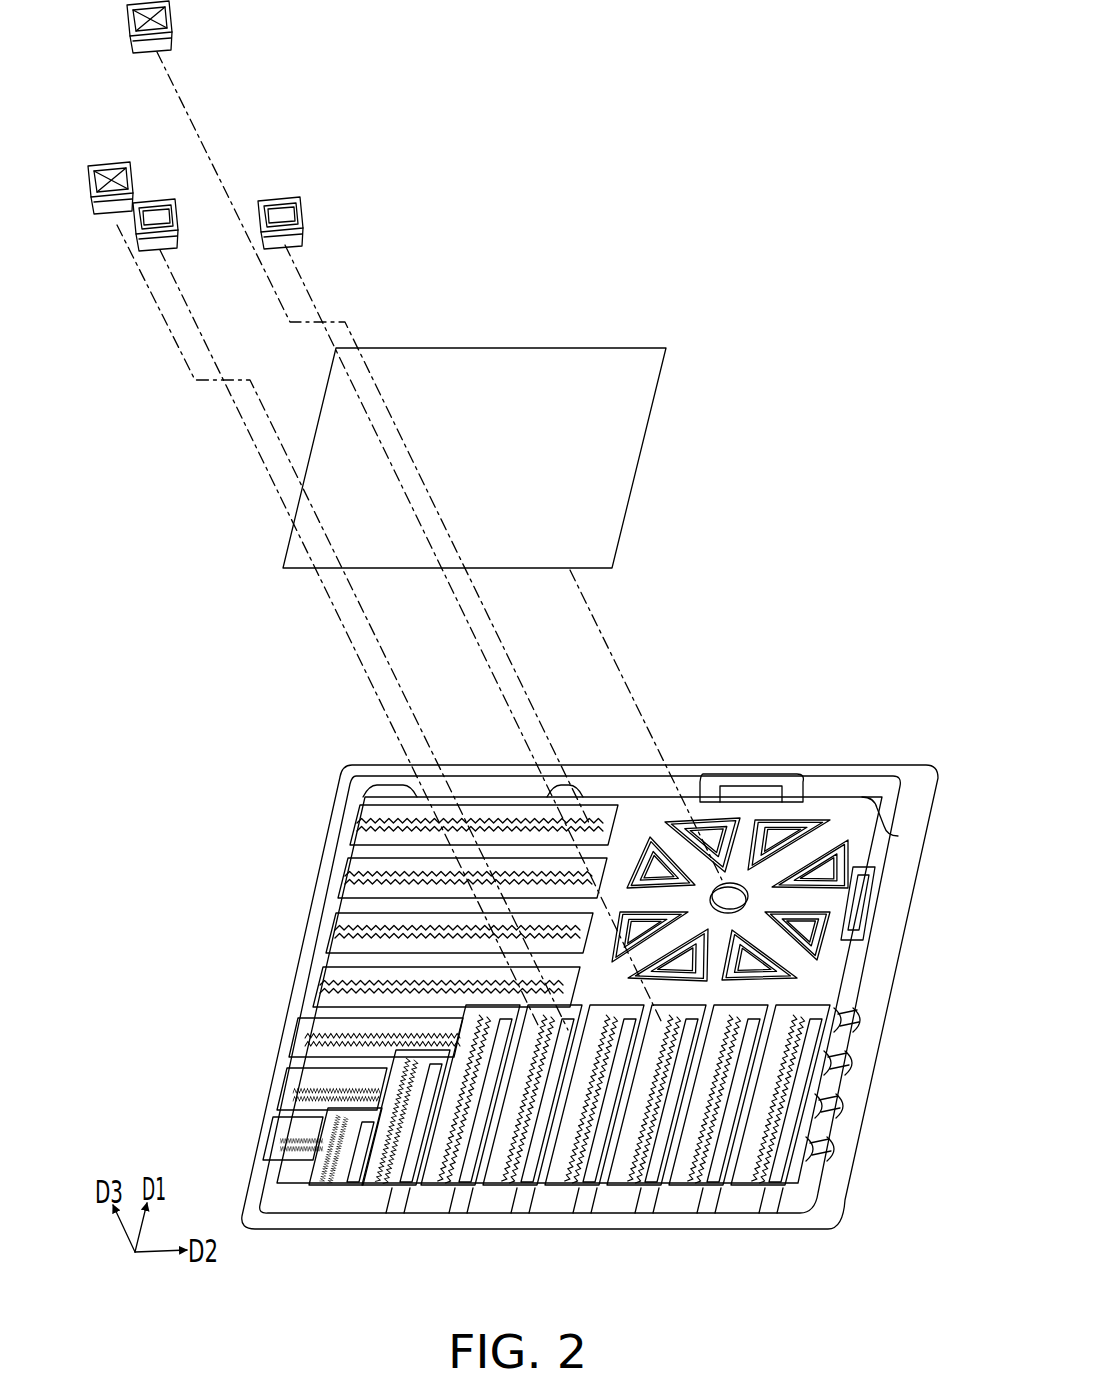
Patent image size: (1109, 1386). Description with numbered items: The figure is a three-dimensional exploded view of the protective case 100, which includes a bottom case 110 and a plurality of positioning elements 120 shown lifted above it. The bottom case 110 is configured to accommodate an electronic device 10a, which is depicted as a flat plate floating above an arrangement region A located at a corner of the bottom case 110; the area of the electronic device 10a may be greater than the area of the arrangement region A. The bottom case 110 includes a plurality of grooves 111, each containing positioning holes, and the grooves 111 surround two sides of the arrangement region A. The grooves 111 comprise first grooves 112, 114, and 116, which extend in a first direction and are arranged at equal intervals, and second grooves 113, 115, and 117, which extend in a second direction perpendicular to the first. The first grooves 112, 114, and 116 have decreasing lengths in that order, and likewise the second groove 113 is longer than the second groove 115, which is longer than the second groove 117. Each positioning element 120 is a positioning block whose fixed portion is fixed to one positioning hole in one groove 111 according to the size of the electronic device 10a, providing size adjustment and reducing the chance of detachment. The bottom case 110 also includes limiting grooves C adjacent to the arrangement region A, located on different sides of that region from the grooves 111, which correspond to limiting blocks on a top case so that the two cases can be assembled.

The protective case 100 is at (530, 666).
The positioning elements 120 is at (172, 14).
The bottom case 110 is at (549, 999).
The electronic device 10a is at (622, 468).
The grooves 111 is at (478, 1068).
The first groove 112 is at (376, 927).
The second groove 113 is at (456, 1146).
The first groove 114 is at (357, 1042).
The second groove 115 is at (395, 1146).
The first groove 116 is at (343, 1097).
The second groove 117 is at (338, 1146).
The arrangement region A is at (843, 815).
The limiting grooves C is at (750, 798).